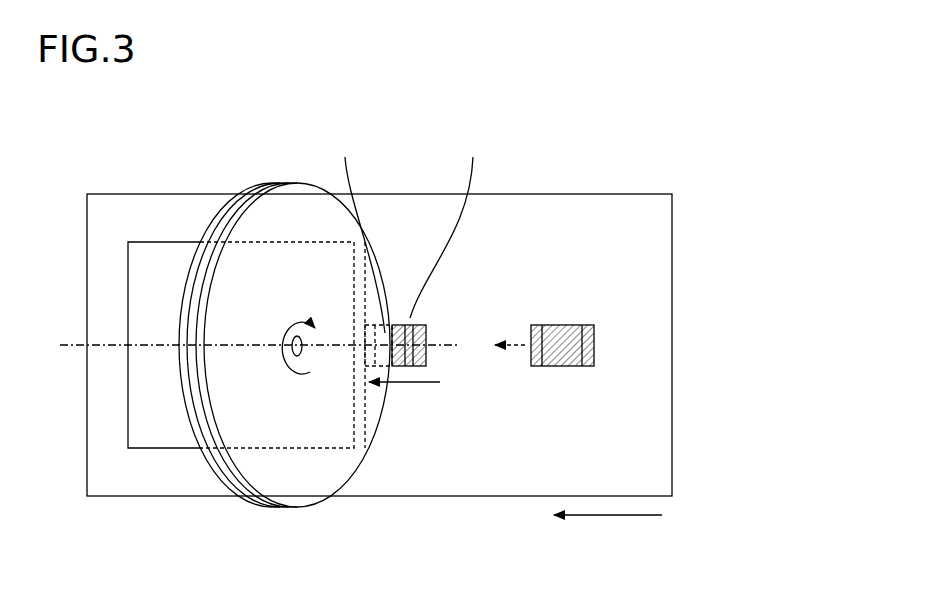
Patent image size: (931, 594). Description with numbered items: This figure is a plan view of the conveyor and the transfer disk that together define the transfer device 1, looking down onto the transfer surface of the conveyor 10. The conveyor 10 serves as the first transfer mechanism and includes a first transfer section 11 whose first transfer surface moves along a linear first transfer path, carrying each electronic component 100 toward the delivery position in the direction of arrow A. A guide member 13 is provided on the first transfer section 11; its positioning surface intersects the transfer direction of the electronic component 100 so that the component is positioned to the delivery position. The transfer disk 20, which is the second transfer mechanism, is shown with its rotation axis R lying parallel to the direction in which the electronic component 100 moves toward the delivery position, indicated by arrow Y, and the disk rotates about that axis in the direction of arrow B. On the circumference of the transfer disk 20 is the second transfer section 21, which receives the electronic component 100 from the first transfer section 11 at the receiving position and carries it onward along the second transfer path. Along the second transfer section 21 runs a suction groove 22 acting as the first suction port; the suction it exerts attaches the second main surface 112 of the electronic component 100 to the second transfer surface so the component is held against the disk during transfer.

The transfer device 1 is at (614, 145).
The conveyor 10 is at (104, 192).
The first transfer section 11 is at (646, 243).
The guide member 13 is at (152, 437).
The transfer disk 20 is at (280, 170).
The second transfer section 21 is at (208, 223).
The suction groove 22 is at (232, 213).
The electronic component 100 is at (428, 322).
The second main surface 112 is at (400, 333).